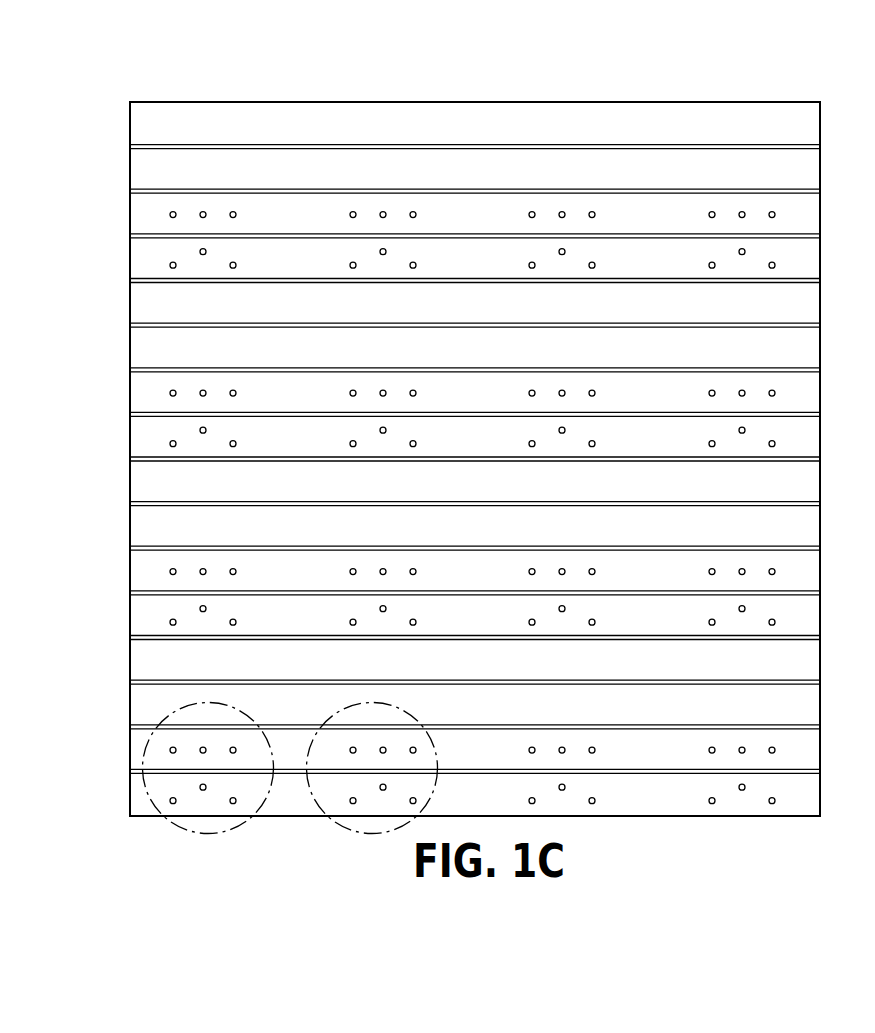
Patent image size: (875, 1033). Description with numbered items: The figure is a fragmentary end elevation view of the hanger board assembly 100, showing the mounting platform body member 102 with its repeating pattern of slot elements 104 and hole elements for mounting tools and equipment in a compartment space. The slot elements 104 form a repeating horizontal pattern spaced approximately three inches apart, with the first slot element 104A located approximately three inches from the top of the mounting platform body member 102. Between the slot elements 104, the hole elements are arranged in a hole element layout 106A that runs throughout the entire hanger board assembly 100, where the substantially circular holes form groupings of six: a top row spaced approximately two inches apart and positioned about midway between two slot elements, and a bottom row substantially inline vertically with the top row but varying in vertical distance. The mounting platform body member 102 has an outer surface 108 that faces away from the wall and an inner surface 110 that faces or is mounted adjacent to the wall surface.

The hanger board assembly 100 is at (475, 428).
The mounting platform body member 102 is at (777, 98).
The slot element 104 is at (156, 423).
The first slot element 104A is at (156, 155).
The hole element layout 106A is at (163, 828).
The outer surface 108 is at (805, 662).
The inner surface 110 is at (818, 710).